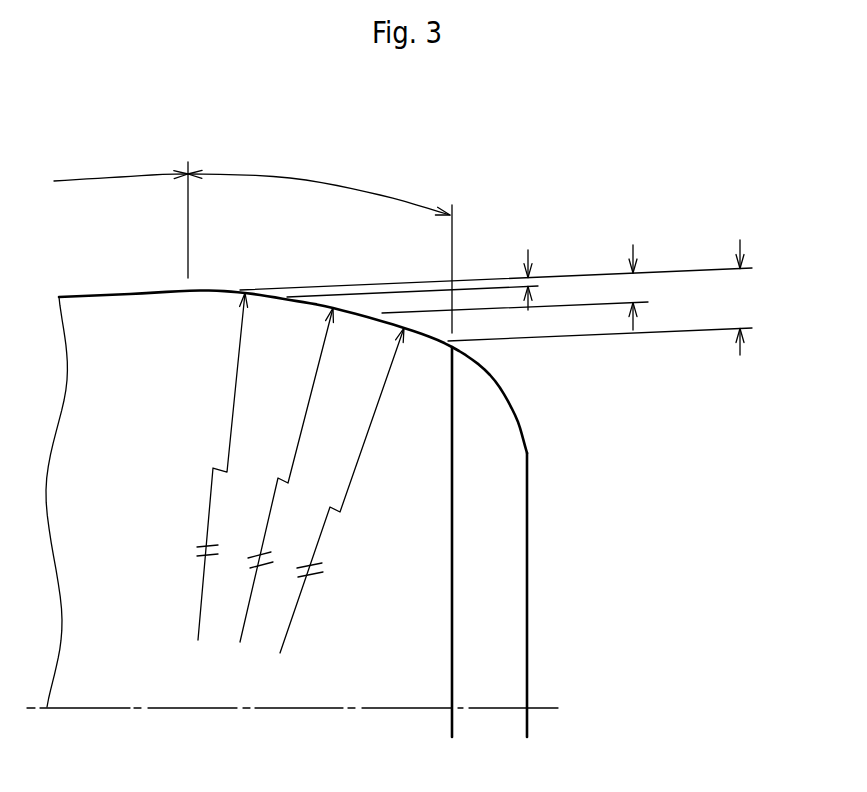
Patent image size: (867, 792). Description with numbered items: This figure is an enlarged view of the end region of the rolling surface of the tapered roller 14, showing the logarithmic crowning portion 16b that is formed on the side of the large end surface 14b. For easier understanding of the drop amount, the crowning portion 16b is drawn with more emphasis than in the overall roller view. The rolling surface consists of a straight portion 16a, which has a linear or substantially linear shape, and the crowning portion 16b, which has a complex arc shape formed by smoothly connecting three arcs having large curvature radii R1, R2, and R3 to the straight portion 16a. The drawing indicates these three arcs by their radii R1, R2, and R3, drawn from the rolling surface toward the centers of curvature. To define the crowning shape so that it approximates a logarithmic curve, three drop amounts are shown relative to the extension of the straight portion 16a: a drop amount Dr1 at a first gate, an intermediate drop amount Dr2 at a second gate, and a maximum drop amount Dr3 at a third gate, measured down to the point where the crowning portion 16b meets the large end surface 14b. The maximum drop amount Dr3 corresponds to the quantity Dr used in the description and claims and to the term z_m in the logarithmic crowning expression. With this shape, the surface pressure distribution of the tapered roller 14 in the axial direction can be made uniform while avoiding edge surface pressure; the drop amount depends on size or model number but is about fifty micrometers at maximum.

The tapered roller 14 is at (127, 350).
The large end surface 14b is at (527, 585).
The straight portion 16a is at (120, 175).
The crowning portion 16b is at (313, 182).
The curvature radius R1 is at (233, 403).
The curvature radius R2 is at (307, 413).
The curvature radius R3 is at (360, 460).
The drop amount Dr1 is at (496, 267).
The intermediate drop amount Dr2 is at (518, 274).
The maximum drop amount Dr3 is at (621, 283).